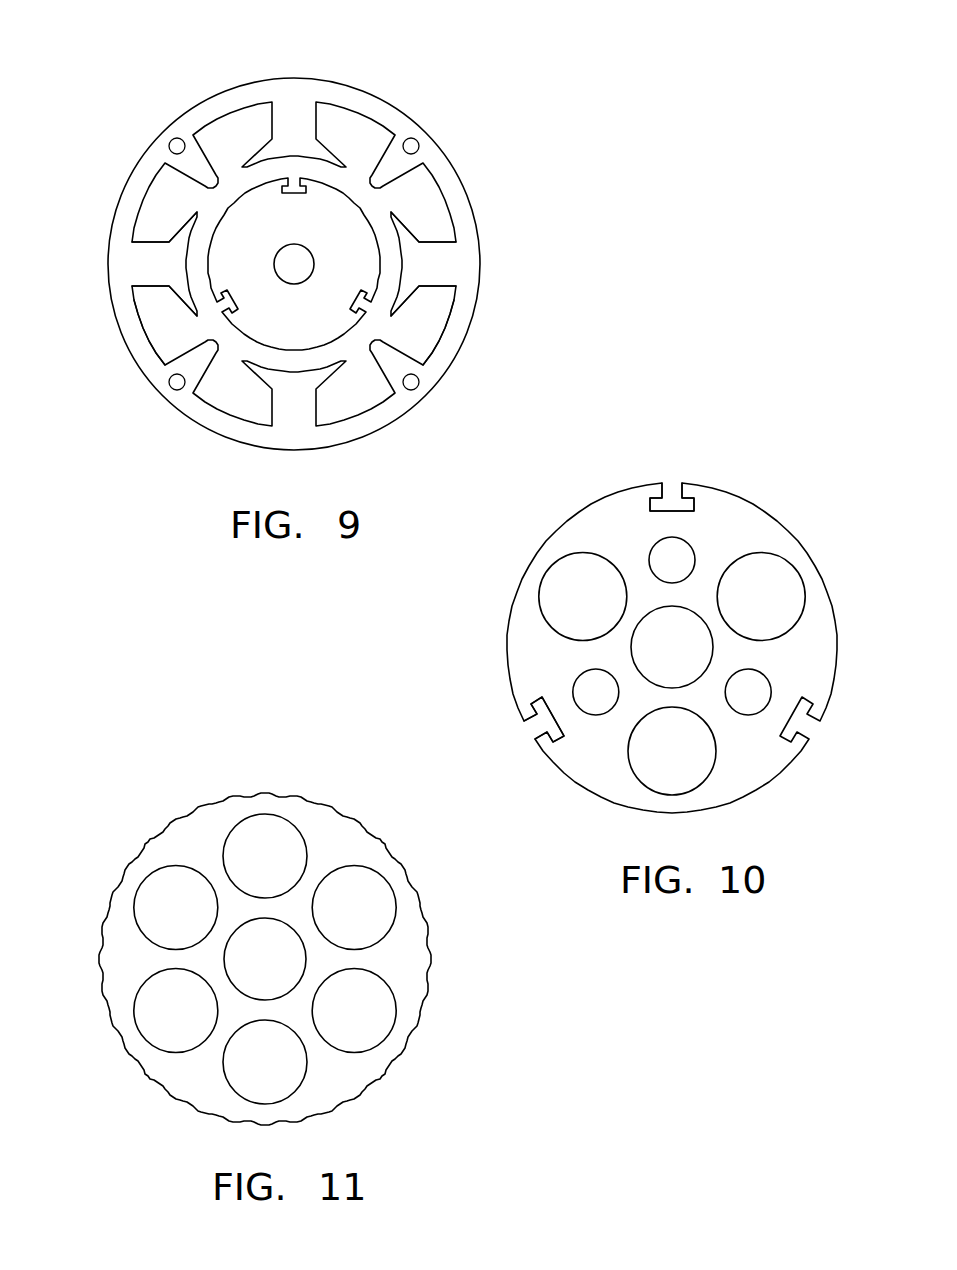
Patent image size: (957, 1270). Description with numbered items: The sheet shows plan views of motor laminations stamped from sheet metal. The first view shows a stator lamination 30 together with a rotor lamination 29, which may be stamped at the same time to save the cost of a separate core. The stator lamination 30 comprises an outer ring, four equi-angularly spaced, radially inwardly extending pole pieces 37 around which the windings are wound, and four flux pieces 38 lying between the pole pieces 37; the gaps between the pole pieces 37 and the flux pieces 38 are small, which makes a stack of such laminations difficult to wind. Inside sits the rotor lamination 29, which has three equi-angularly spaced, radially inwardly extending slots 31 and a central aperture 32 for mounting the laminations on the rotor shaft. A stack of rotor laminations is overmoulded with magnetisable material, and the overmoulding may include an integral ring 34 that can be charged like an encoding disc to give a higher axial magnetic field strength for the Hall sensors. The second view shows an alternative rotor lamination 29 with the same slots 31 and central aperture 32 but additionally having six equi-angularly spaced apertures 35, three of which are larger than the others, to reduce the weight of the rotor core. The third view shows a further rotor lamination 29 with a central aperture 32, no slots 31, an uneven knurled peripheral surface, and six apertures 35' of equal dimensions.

In FIG. 9, the stator lamination 30 is at (445, 75).
In FIG. 9, the integral ring 34 is at (432, 158).
In FIG. 9, the pole piece 37 is at (422, 263).
In FIG. 9, the flux piece 38 is at (385, 350).
In FIG. 9, the rotor lamination 29 is at (358, 250).
In FIG. 10, the rotor lamination 29 is at (547, 663).
In FIG. 11, the rotor lamination 29 is at (192, 845).
In FIG. 9, the central aperture 32 is at (300, 268).
In FIG. 10, the central aperture 32 is at (690, 663).
In FIG. 11, the central aperture 32 is at (284, 975).
In FIG. 10, the slot 31 is at (673, 490).
In FIG. 10, the aperture 35 is at (635, 618).
In FIG. 11, the aperture 35' is at (279, 956).